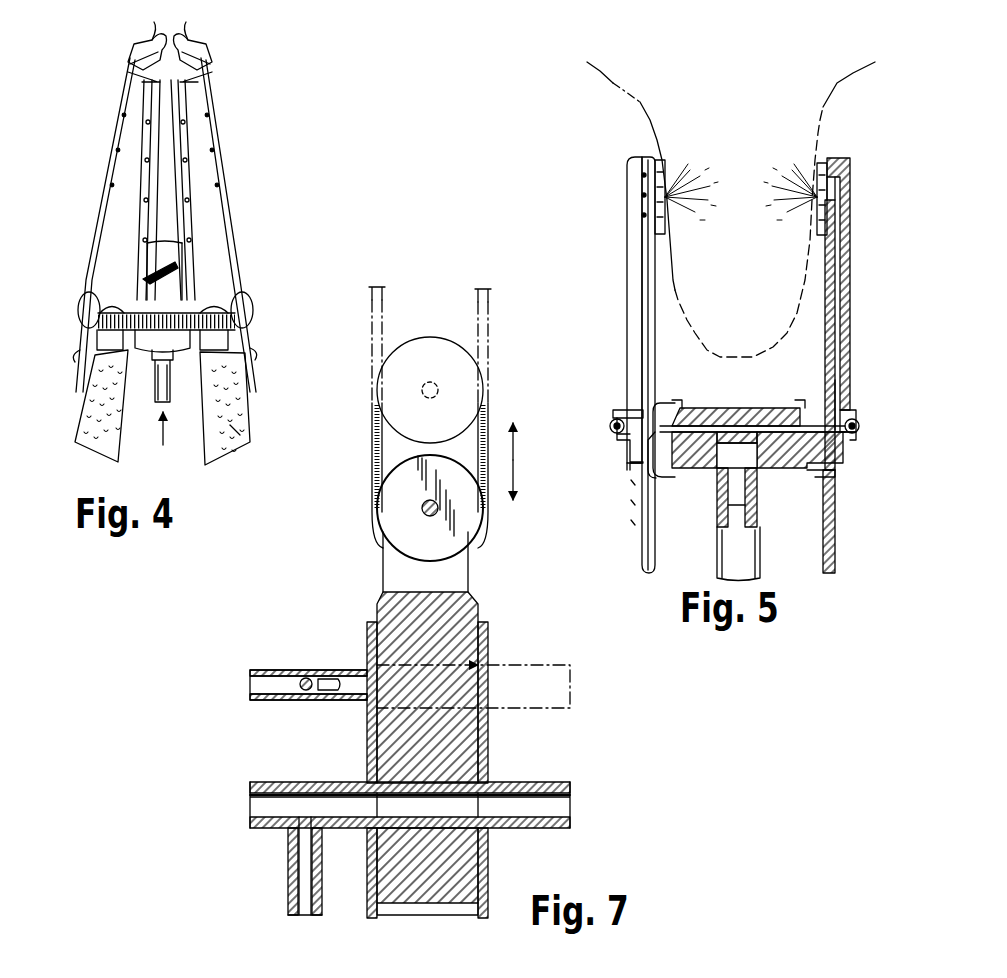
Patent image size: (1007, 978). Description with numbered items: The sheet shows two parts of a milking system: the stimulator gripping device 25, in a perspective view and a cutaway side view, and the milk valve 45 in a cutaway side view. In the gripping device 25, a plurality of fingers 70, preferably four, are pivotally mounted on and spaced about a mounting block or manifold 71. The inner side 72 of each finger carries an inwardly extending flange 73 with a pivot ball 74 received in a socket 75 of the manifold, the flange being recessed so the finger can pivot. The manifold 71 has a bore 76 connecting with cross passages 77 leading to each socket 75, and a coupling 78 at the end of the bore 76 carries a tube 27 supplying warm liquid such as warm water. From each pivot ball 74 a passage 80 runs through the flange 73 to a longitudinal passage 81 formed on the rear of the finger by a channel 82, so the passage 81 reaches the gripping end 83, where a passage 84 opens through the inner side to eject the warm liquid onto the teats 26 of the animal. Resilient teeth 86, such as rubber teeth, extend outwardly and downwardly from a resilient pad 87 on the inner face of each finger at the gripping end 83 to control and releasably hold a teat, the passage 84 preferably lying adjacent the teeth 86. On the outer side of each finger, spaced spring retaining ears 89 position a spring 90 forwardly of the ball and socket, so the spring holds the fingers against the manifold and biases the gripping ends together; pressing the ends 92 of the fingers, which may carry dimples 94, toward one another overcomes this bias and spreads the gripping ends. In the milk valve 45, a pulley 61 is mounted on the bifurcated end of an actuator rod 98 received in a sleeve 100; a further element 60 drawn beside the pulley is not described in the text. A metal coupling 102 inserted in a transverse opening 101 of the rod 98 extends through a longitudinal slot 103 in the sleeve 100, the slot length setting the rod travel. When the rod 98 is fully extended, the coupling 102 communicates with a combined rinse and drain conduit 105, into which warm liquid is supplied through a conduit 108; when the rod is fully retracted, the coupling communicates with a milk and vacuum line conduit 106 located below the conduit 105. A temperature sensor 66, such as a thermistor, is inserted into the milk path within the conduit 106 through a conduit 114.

In FIG. 4, the stimulator gripping device 25 is at (229, 124).
In FIG. 5, the stimulator gripping device 25 is at (628, 318).
In FIG. 5, the teats 26 is at (632, 100).
In FIG. 5, the tube 27 is at (717, 566).
In FIG. 7, the milk valve 45 is at (374, 612).
In FIG. 7, the guide tube 60 is at (382, 313).
In FIG. 7, the pulley 61 is at (432, 352).
In FIG. 7, the temperature sensor 66 is at (290, 845).
In FIG. 4, the fingers 70 is at (80, 360).
In FIG. 5, the fingers 70 is at (643, 478).
In FIG. 4, the mounting block, or manifold 71 is at (165, 247).
In FIG. 5, the mounting block, or manifold 71 is at (720, 408).
In FIG. 4, the inner side 72 is at (148, 45).
In FIG. 5, the inner side 72 is at (662, 352).
In FIG. 5, the flange 73 is at (660, 478).
In FIG. 5, the pivot ball 74 is at (678, 468).
In FIG. 5, the socket 75 is at (678, 407).
In FIG. 5, the bore 76 is at (745, 468).
In FIG. 5, the cross passages 77 is at (765, 408).
In FIG. 4, the coupling 78 is at (158, 400).
In FIG. 5, the coupling 78 is at (757, 530).
In FIG. 5, the passage 80 is at (826, 400).
In FIG. 5, the longitudinal passage 81 is at (845, 270).
In FIG. 4, the channel 82 is at (128, 141).
In FIG. 5, the channel 82 is at (630, 241).
In FIG. 4, the gripping end 83 is at (205, 86).
In FIG. 5, the gripping end 83 is at (644, 262).
In FIG. 5, the passage 84 is at (840, 192).
In FIG. 4, the resilient teeth 86 is at (183, 42).
In FIG. 5, the resilient teeth 86 is at (668, 222).
In FIG. 5, the resilient pad 87 is at (655, 176).
In FIG. 4, the spring retaining ears 89 is at (248, 300).
In FIG. 5, the spring retaining ears 89 is at (610, 420).
In FIG. 4, the spring 90 is at (250, 315).
In FIG. 5, the spring 90 is at (612, 430).
In FIG. 4, the ends 92 is at (75, 422).
In FIG. 5, the ends 92 is at (640, 520).
In FIG. 4, the dimples 94 is at (232, 432).
In FIG. 5, the dimples 94 is at (645, 552).
In FIG. 7, the actuator rod 98 is at (470, 571).
In FIG. 7, the sleeve 100 is at (488, 865).
In FIG. 7, the transverse opening 101 is at (468, 782).
In FIG. 7, the metal coupling 102 is at (530, 660).
In FIG. 7, the longitudinal slot 103 is at (483, 732).
In FIG. 7, the combined rinse and drain conduit 105 is at (277, 668).
In FIG. 7, the milk and vacuum line conduit 106 is at (300, 782).
In FIG. 7, the conduit 108 is at (310, 677).
In FIG. 7, the conduit 114 is at (288, 882).